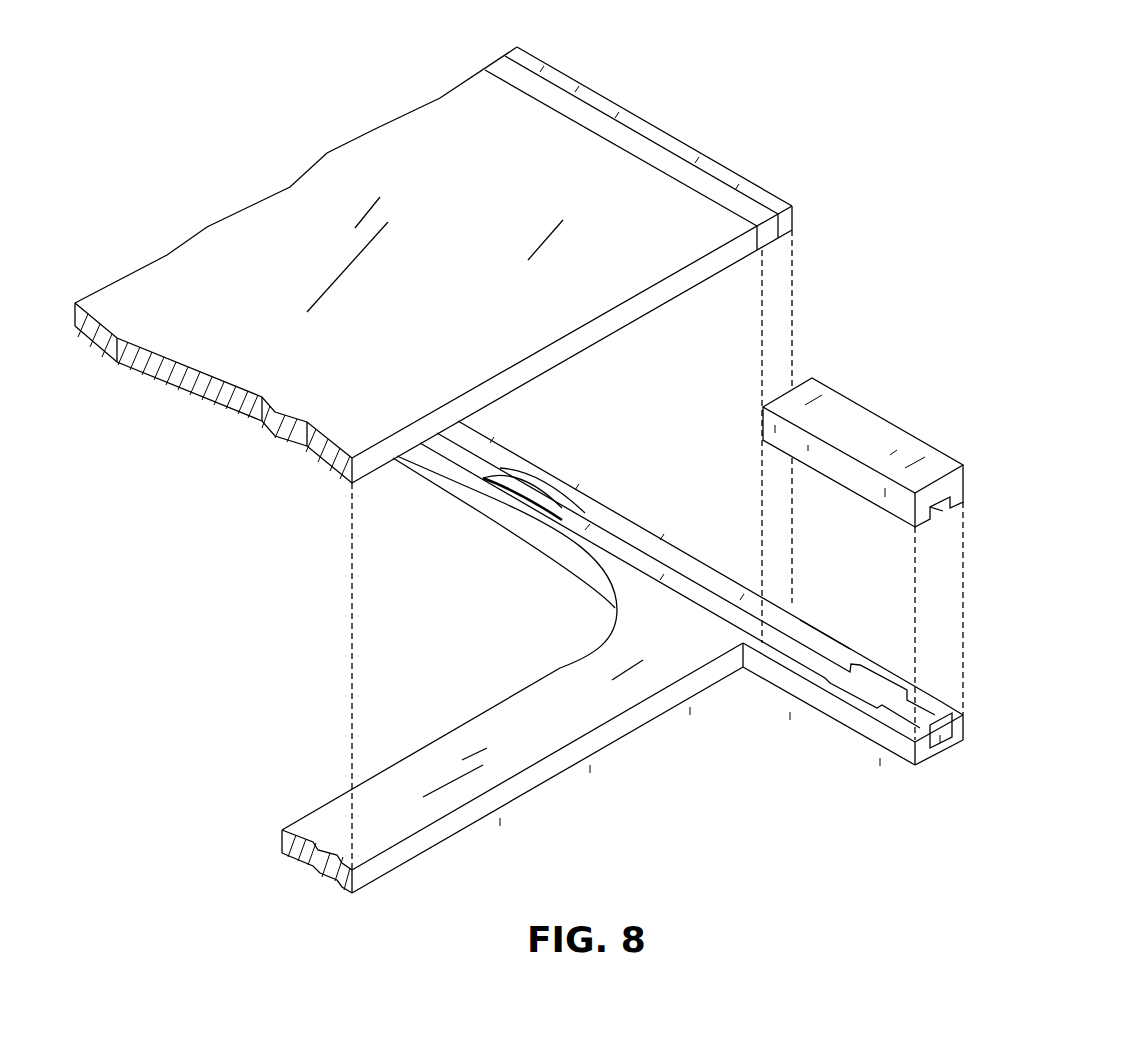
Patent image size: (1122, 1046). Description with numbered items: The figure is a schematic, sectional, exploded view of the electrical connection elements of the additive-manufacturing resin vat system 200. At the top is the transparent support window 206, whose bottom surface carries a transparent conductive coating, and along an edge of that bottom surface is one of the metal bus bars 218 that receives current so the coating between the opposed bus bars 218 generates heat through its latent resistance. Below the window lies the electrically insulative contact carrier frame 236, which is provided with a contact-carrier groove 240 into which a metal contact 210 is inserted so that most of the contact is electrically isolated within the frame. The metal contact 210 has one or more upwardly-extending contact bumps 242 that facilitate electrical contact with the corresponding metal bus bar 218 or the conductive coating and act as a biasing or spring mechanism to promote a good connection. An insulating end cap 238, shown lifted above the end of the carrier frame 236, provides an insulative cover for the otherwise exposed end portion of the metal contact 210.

The resin vat system 200 is at (1008, 169).
The transparent support window 206 is at (607, 98).
The metal bus bars 218 is at (685, 172).
The contact carrier frame 236 is at (658, 538).
The contact bumps 242 is at (547, 480).
The contact-carrier grooves 240 is at (806, 628).
The insulating end caps 238 is at (888, 414).
The metal contacts 210 is at (943, 730).